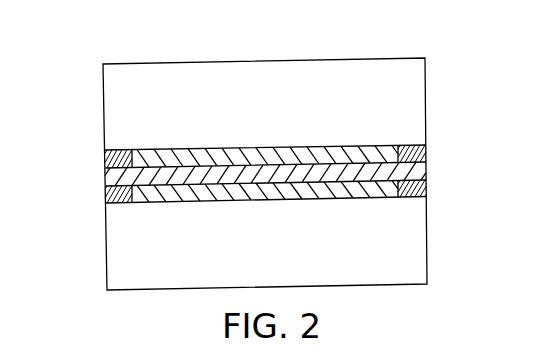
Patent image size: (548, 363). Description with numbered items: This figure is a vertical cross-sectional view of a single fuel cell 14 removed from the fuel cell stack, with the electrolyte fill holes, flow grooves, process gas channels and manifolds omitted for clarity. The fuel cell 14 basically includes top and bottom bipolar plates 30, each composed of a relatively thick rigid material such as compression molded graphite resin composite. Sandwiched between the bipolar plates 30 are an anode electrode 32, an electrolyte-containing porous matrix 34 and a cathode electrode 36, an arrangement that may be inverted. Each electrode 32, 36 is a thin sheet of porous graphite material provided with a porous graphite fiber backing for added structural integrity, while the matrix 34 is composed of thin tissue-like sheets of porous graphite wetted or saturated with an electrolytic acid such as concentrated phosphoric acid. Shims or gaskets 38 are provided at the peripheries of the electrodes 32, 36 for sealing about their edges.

The fuel cell 14 is at (272, 158).
The bipolar plate 30 is at (115, 93).
The anode electrode 32 is at (248, 155).
The electrolyte-containing porous matrix 34 is at (120, 175).
The cathode electrode 36 is at (277, 193).
The shims or gaskets 38 is at (426, 152).